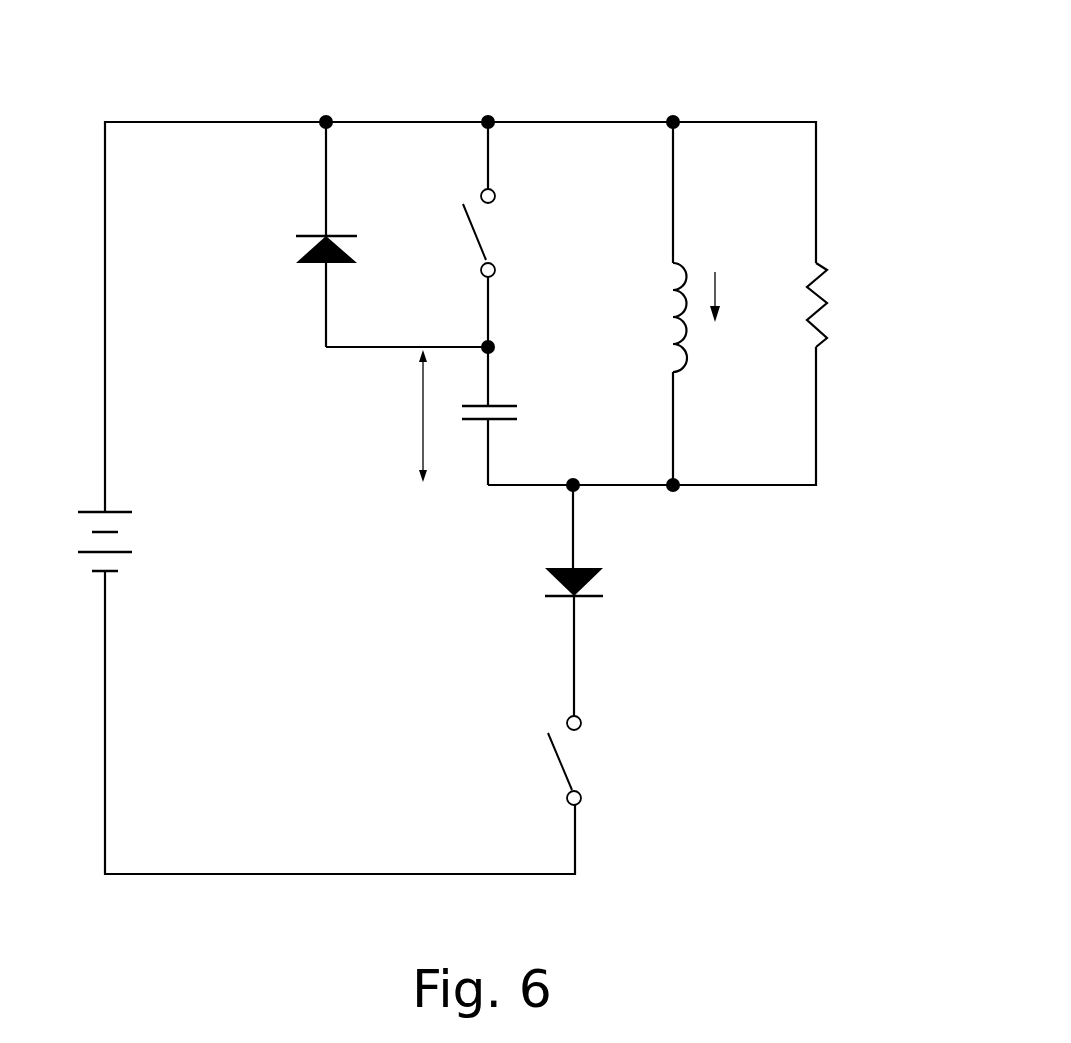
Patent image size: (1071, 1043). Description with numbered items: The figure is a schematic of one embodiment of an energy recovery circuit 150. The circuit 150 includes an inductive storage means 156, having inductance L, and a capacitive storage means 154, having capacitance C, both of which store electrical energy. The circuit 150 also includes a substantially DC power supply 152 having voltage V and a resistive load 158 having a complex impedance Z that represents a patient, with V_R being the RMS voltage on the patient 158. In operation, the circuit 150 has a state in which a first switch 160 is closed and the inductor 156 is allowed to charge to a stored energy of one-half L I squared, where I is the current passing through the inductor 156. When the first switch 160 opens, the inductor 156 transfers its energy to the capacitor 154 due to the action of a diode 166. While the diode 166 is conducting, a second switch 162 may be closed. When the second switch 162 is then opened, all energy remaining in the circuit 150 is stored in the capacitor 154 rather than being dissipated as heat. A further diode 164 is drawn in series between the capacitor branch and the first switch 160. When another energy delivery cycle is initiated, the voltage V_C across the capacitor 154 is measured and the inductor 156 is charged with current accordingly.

The energy recovery circuit 150 is at (619, 96).
The DC power supply 152 is at (88, 553).
The capacitive storage means 154 is at (478, 422).
The inductive storage means 156 is at (680, 292).
The resistive load 158 is at (827, 265).
The first switch 160 is at (563, 762).
The second switch 162 is at (470, 232).
The diode 164 is at (557, 598).
The diode 166 is at (310, 236).